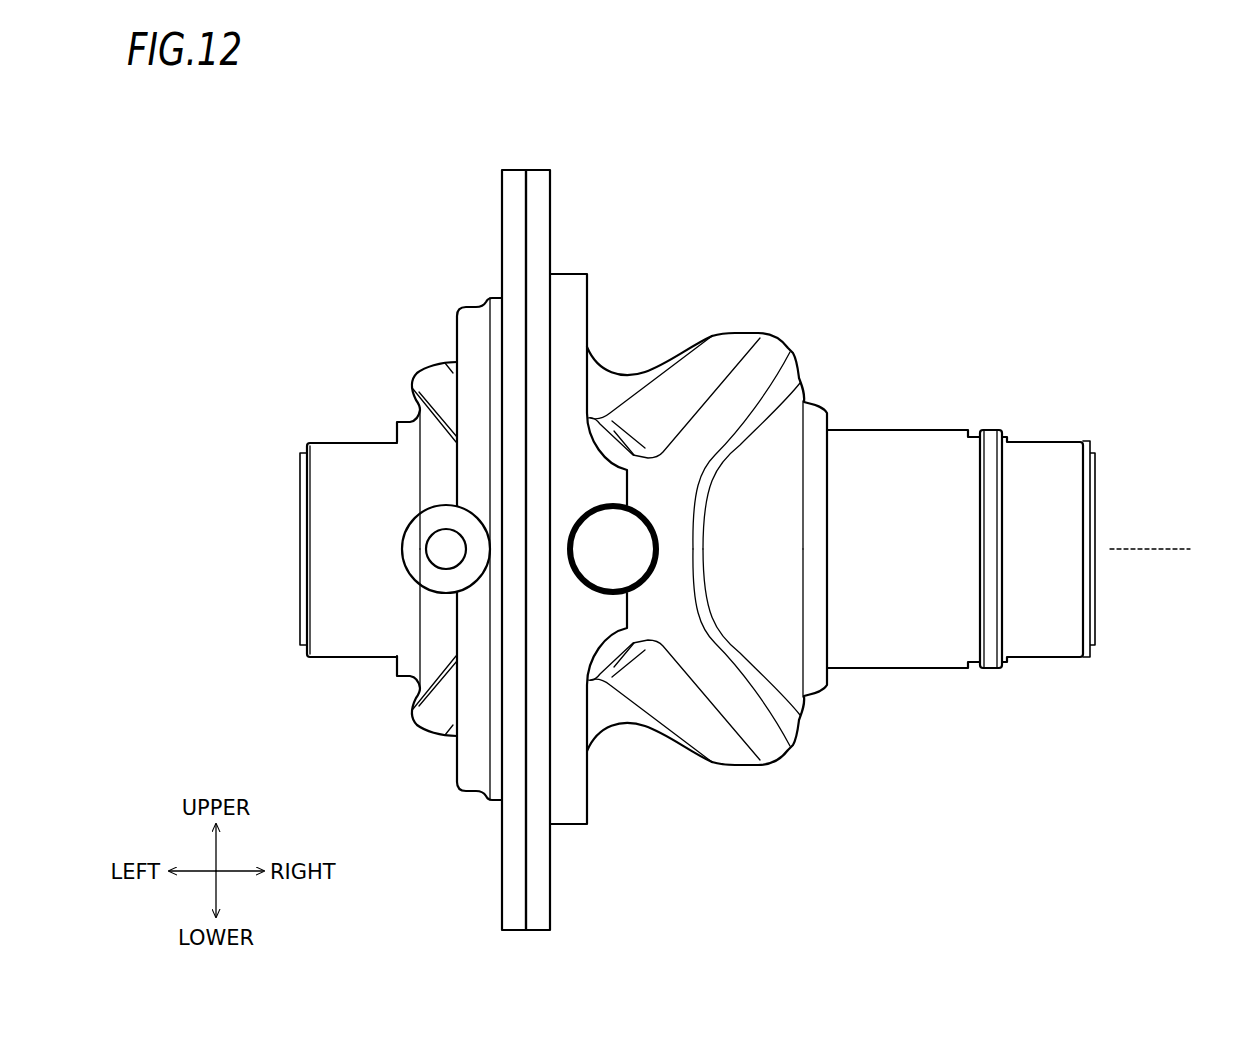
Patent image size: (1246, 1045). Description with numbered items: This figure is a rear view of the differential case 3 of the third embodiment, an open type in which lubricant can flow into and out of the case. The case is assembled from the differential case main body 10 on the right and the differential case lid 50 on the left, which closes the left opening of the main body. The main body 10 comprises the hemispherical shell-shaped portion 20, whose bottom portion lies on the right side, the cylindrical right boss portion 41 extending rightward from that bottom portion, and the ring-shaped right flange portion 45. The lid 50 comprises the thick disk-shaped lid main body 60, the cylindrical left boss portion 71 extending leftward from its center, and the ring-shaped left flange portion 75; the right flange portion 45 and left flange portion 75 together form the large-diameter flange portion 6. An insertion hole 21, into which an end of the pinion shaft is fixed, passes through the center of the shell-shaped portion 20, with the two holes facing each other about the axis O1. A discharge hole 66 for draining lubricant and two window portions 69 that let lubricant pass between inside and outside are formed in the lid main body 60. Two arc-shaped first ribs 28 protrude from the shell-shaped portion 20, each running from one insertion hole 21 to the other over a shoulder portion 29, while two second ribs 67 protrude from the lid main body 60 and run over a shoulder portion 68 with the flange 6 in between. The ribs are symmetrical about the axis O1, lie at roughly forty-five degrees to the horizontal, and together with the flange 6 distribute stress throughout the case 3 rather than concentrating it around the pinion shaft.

The differential case 3 is at (342, 180).
The flange portion 6 is at (482, 130).
The left flange portion 75 is at (513, 180).
The right flange portion 45 is at (538, 180).
The differential case main body 10 is at (790, 345).
The hemispherical shell-shaped portion 20 is at (738, 331).
The insertion hole 21 is at (640, 547).
The first rib 28 is at (753, 370).
The shoulder portion 29 is at (797, 392).
The right boss portion 41 is at (923, 675).
The differential case lid 50 is at (415, 370).
The lid main body 60 is at (455, 778).
The discharge hole 66 is at (444, 548).
The second rib 67 is at (441, 388).
The shoulder portion 68 is at (432, 416).
The window portion 69 is at (667, 366).
The left boss portion 71 is at (322, 658).
The axis O1 is at (1168, 550).